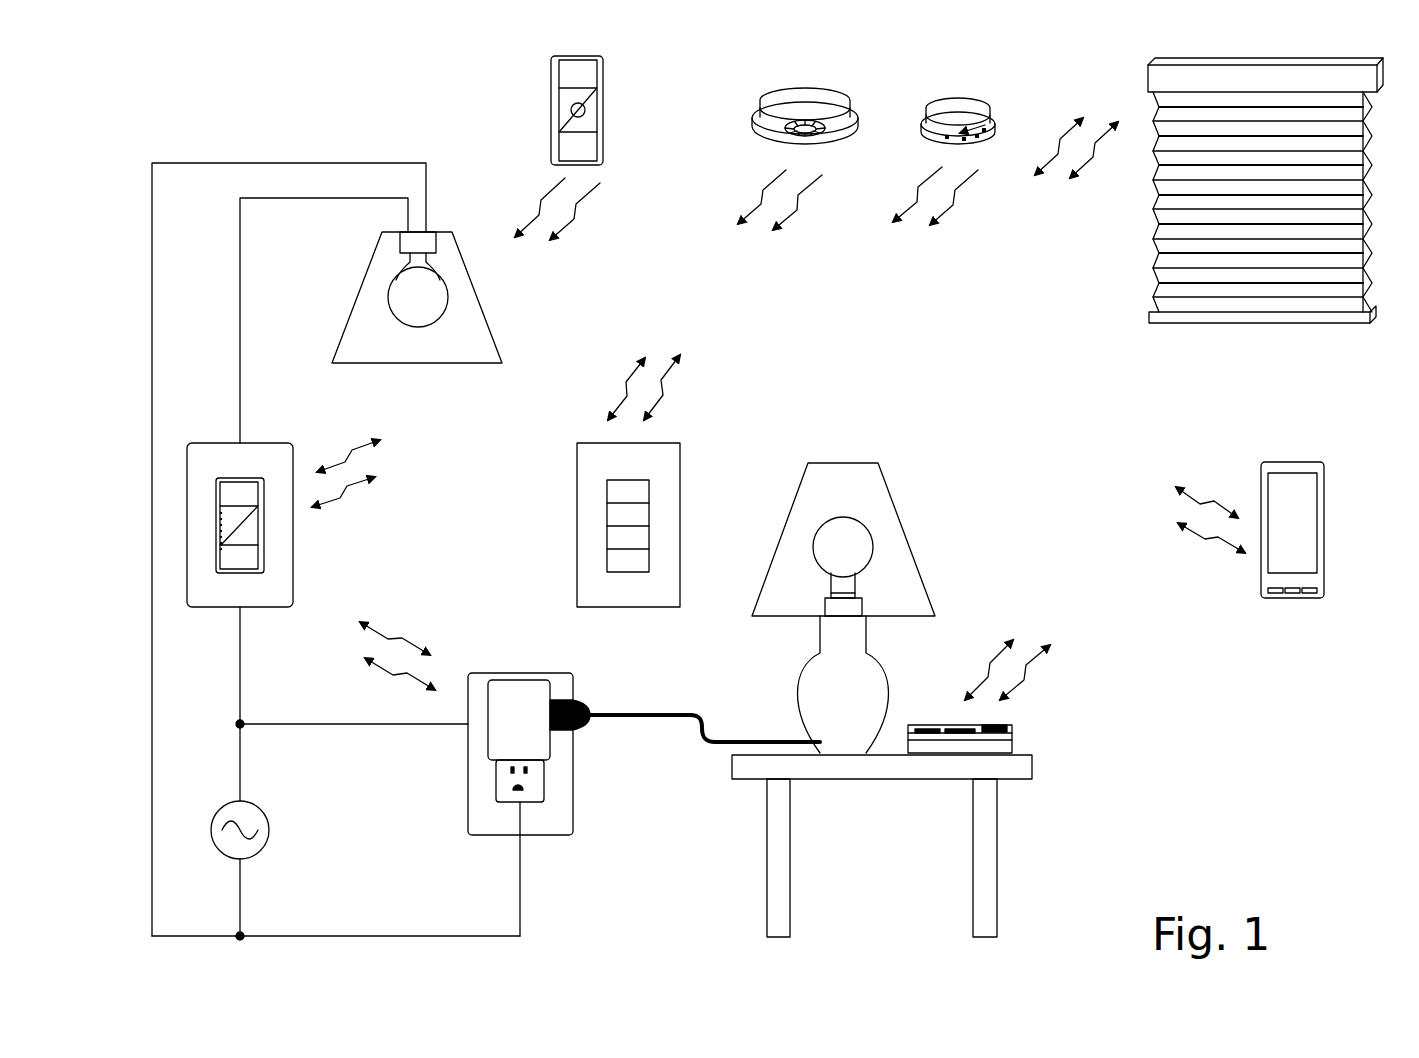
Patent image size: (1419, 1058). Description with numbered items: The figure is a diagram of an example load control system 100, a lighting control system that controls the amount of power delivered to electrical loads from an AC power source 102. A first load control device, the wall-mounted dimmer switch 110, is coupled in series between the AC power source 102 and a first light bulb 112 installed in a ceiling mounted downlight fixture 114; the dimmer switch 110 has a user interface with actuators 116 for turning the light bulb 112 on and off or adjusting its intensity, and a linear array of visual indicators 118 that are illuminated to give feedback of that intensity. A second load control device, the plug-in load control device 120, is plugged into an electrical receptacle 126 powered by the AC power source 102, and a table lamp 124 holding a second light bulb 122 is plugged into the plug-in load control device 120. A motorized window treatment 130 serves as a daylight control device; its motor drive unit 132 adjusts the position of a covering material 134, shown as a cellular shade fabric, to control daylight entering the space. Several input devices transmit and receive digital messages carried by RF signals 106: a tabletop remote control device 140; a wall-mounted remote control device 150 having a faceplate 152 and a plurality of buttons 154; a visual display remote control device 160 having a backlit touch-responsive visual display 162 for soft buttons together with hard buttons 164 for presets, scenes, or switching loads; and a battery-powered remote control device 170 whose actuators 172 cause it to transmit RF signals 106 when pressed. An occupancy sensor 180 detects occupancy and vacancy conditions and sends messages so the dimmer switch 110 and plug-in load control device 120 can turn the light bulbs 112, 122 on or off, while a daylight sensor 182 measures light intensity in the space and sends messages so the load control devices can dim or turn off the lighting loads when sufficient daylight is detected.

The load control system 100 is at (305, 108).
The AC power source 102 is at (257, 823).
The RF signals 106 is at (372, 506).
The wall-mounted dimmer switch 110 is at (253, 514).
The first light bulb 112 is at (417, 287).
The ceiling mounted downlight fixture 114 is at (397, 324).
The actuators 116 is at (242, 490).
The visual indicators 118 is at (212, 526).
The plug-in load control device 120 is at (503, 723).
The second light bulb 122 is at (845, 545).
The table lamp 124 is at (870, 608).
The electrical receptacle 126 is at (603, 793).
The motorized window treatment 130 is at (1210, 230).
The motor drive unit 132 is at (1163, 78).
The covering material 134 is at (1182, 228).
The tabletop remote control device 140 is at (1025, 722).
The wall-mounted remote control device 150 is at (630, 540).
The faceplate 152 is at (618, 593).
The buttons 154 is at (635, 560).
The visual display remote control device 160 is at (1266, 514).
The visual display 162 is at (1308, 530).
The hard buttons 164 is at (1278, 594).
The battery-powered remote control device 170 is at (556, 106).
The actuators 172 is at (578, 71).
The occupancy sensor 180 is at (775, 118).
The daylight sensor 182 is at (950, 122).